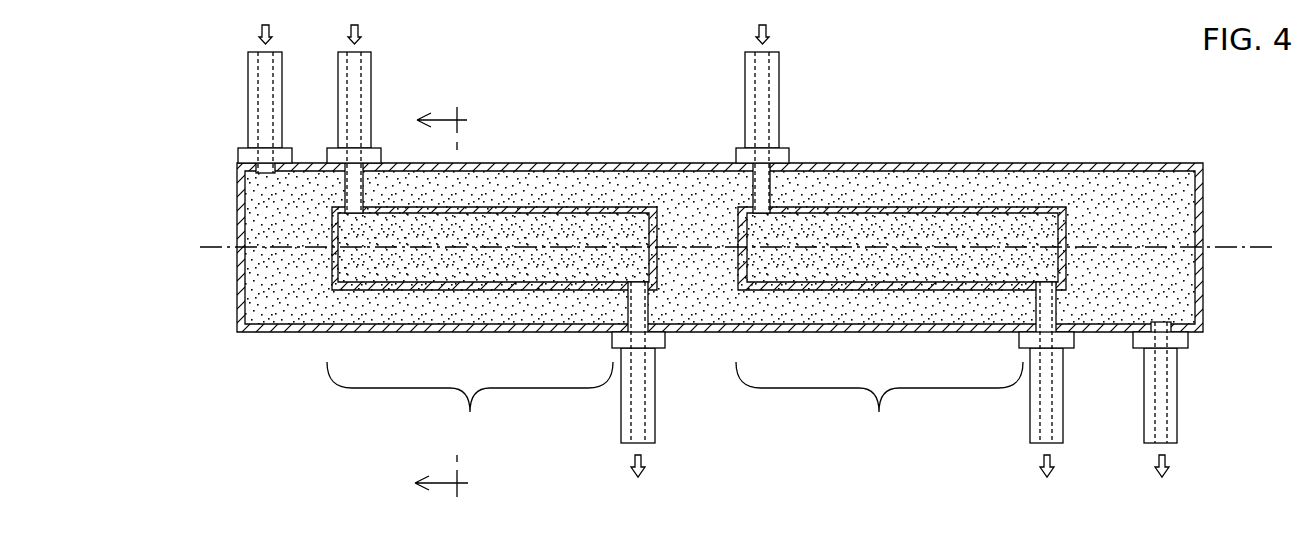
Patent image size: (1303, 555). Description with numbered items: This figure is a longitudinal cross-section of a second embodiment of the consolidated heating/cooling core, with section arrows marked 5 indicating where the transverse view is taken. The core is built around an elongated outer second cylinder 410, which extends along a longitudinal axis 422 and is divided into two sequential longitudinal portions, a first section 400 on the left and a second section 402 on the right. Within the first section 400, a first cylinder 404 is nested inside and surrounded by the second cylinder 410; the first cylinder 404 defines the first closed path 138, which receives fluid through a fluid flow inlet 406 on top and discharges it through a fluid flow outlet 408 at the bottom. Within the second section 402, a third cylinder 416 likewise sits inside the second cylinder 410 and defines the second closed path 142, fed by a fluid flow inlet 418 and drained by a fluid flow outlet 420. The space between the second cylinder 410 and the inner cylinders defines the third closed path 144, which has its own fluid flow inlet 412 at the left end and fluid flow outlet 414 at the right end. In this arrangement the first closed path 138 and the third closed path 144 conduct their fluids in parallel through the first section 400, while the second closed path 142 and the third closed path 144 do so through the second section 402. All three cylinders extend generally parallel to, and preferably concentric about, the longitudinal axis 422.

The first closed path 138 is at (478, 232).
The second closed path 142 is at (855, 232).
The third closed path 144 is at (290, 305).
The first section 400 is at (470, 401).
The second section 402 is at (879, 401).
The first cylinder 404 is at (537, 207).
The fluid flow inlet 406 is at (350, 49).
The fluid flow outlet 408 is at (632, 448).
The second cylinder 410 is at (613, 163).
The fluid flow inlet 412 is at (261, 49).
The fluid flow outlet 414 is at (1155, 448).
The third cylinder 416 is at (924, 212).
The fluid flow inlet 418 is at (757, 49).
The fluid flow outlet 420 is at (1040, 448).
The longitudinal axis 422 is at (1237, 247).
The section line 5- 5 is at (441, 305).